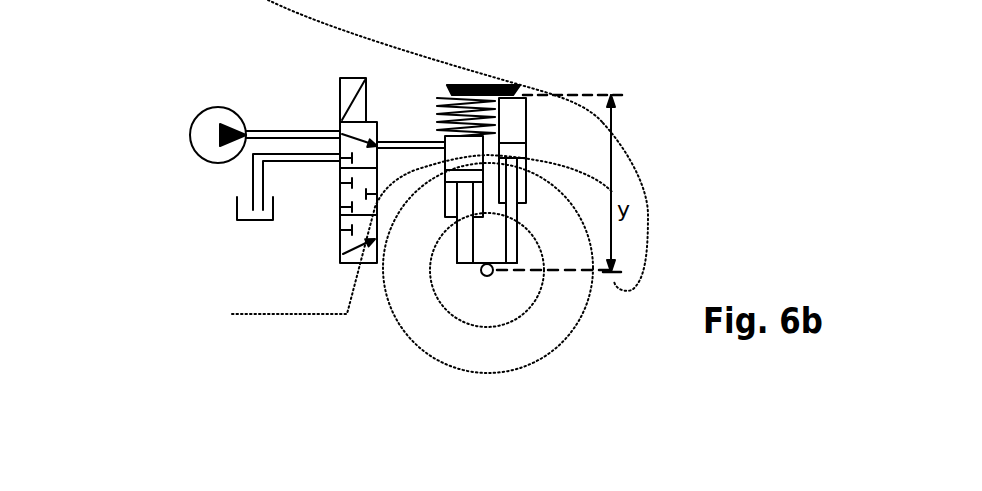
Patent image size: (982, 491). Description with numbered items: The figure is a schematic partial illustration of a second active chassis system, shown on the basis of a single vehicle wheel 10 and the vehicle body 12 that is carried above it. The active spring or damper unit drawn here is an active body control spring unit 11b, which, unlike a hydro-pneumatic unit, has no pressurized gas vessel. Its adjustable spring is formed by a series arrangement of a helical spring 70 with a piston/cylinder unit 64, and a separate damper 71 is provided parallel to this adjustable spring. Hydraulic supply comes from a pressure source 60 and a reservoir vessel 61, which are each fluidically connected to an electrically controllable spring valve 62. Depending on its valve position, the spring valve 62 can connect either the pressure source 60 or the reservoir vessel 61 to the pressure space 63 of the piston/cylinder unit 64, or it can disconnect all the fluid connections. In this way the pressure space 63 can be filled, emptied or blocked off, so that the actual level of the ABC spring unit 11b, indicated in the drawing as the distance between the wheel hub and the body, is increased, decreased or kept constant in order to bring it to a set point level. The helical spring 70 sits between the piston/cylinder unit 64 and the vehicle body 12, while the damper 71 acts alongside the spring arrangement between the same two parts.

The vehicle wheel 10 is at (515, 347).
The active body control (ABC) spring unit 11b is at (668, 126).
The vehicle body 12 is at (630, 178).
The pressure source 60 is at (204, 124).
The reservoir vessel 61 is at (243, 210).
The spring valve 62 is at (347, 237).
The pressure space 63 is at (450, 155).
The piston/cylinder unit 64 is at (447, 205).
The helical spring 70 is at (440, 115).
The damper 71 is at (515, 118).